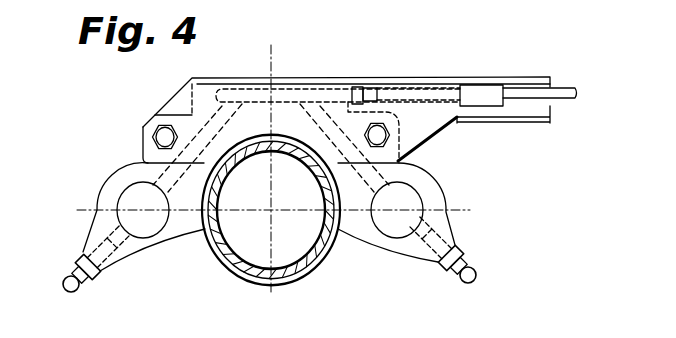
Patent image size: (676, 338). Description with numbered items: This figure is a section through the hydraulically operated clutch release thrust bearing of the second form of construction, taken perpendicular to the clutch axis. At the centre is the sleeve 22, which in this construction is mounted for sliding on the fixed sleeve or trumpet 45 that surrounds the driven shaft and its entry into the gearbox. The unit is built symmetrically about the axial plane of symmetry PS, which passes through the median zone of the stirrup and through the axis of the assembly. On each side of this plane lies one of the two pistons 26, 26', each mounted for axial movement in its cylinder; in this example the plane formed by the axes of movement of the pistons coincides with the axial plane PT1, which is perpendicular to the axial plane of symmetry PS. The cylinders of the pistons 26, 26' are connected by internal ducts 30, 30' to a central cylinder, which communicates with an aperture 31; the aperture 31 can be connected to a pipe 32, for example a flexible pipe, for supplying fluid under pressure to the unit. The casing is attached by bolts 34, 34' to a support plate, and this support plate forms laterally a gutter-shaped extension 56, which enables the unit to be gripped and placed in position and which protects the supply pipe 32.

The sleeve 22 is at (210, 262).
The fixed sleeve 45 is at (323, 257).
The piston 26 is at (109, 230).
The piston 26' is at (426, 237).
The internal duct 30 is at (162, 148).
The internal duct 30' is at (393, 148).
The bolt 34 is at (139, 118).
The bolt 34' is at (417, 143).
The aperture 31 is at (364, 93).
The pipe 32 is at (483, 114).
The gutter-shaped extension 56 is at (503, 80).
The axial plane of symmetry PS is at (273, 60).
The axial plane PT1 is at (468, 210).